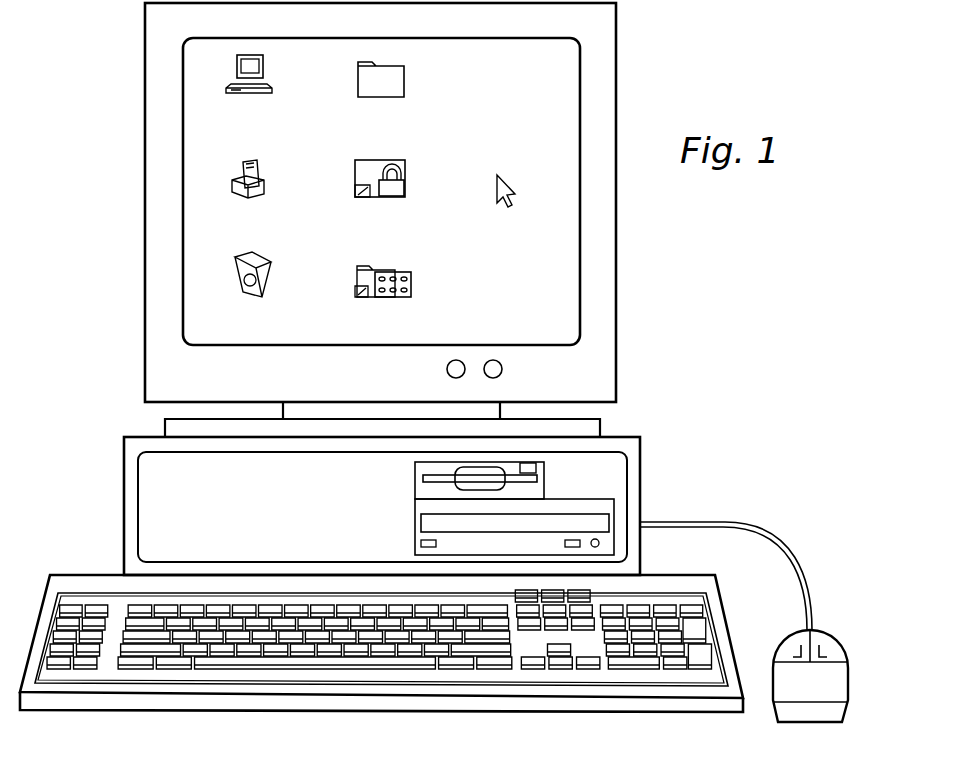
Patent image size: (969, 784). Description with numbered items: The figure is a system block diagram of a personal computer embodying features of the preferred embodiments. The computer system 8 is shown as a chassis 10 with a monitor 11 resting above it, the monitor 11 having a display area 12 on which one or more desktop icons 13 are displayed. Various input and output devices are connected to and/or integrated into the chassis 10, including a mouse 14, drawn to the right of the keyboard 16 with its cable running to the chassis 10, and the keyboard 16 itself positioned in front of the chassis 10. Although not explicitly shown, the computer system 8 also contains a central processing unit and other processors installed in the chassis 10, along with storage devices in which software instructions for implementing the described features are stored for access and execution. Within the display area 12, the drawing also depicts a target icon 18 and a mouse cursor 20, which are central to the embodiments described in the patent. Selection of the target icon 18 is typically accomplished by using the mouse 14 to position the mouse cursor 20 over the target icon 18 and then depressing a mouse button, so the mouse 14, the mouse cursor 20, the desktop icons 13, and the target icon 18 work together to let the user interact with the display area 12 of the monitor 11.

The computer system 8 is at (84, 139).
The chassis 10 is at (124, 515).
The monitor 11 is at (617, 240).
The display area 12 is at (539, 269).
The desktop icons 13 is at (265, 68).
The mouse 14 is at (815, 723).
The keyboard 16 is at (186, 712).
The target icon 18 is at (408, 181).
The mouse cursor 20 is at (508, 181).